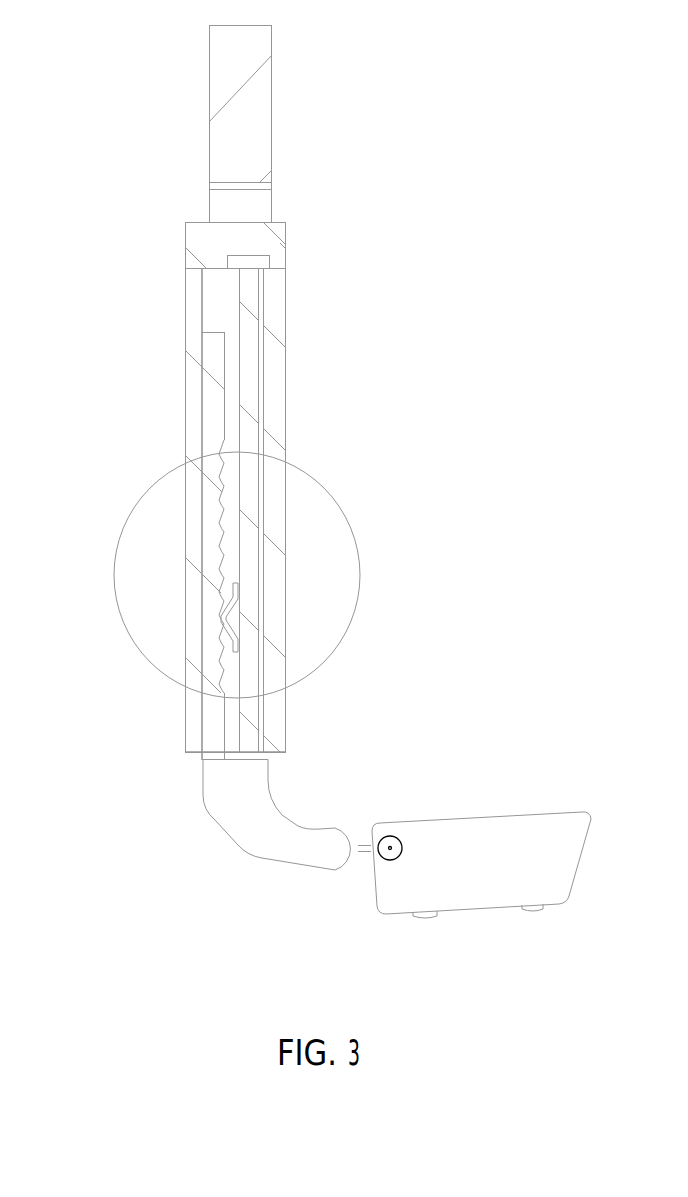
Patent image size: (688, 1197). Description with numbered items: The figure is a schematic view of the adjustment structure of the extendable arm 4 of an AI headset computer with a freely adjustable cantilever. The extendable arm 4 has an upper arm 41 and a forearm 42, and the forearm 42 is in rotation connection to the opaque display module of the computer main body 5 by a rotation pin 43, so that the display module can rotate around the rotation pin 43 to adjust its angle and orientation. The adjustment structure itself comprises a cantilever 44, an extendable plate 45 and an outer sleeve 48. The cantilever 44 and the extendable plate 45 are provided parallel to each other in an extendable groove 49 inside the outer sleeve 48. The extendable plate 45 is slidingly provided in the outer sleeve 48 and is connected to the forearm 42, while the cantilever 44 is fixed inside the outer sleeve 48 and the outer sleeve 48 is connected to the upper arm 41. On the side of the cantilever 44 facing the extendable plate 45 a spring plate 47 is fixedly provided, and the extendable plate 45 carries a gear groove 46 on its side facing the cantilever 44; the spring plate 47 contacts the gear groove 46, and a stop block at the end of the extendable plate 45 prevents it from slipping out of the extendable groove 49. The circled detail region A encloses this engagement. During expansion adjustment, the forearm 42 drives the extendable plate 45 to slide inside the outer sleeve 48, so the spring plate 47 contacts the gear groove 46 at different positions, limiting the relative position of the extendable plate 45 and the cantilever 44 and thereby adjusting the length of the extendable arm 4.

The extendable arm 4 is at (185, 302).
The upper arm 41 is at (255, 127).
The forearm 42 is at (260, 833).
The rotation pin 43 is at (400, 840).
The cantilever 44 is at (248, 350).
The extendable plate 45 is at (215, 710).
The gear groove 46 is at (222, 508).
The spring plate 47 is at (232, 613).
The outer sleeve 48 is at (273, 418).
The extendable groove 49 is at (221, 284).
The computer main body 5 is at (475, 878).
The detail region A is at (358, 550).